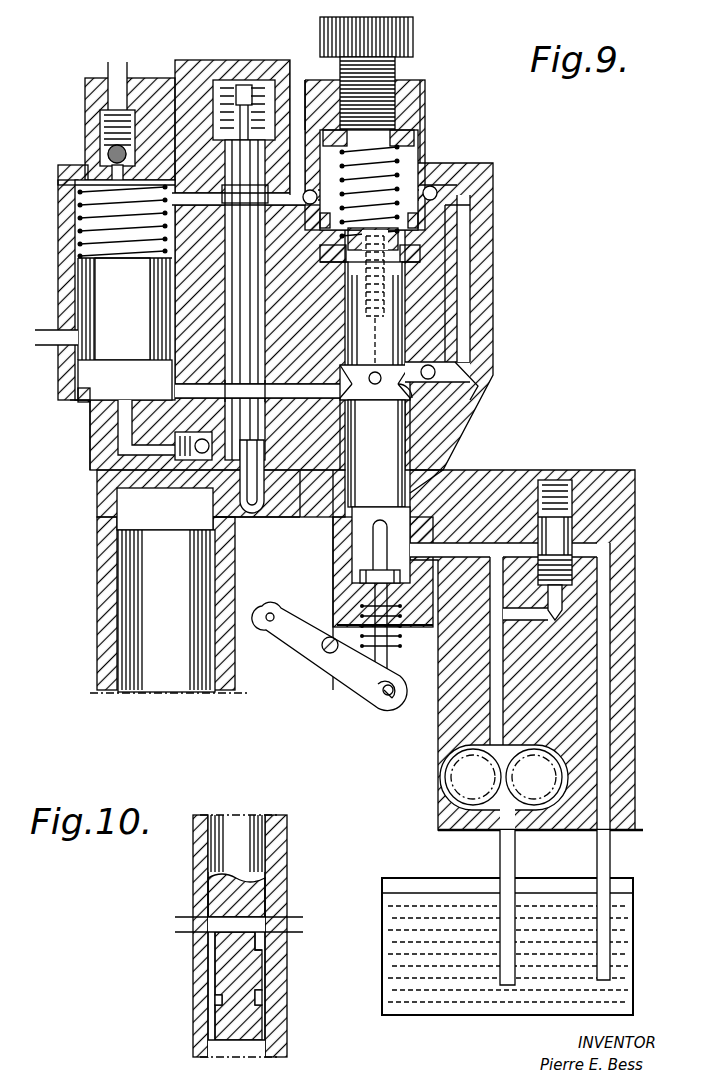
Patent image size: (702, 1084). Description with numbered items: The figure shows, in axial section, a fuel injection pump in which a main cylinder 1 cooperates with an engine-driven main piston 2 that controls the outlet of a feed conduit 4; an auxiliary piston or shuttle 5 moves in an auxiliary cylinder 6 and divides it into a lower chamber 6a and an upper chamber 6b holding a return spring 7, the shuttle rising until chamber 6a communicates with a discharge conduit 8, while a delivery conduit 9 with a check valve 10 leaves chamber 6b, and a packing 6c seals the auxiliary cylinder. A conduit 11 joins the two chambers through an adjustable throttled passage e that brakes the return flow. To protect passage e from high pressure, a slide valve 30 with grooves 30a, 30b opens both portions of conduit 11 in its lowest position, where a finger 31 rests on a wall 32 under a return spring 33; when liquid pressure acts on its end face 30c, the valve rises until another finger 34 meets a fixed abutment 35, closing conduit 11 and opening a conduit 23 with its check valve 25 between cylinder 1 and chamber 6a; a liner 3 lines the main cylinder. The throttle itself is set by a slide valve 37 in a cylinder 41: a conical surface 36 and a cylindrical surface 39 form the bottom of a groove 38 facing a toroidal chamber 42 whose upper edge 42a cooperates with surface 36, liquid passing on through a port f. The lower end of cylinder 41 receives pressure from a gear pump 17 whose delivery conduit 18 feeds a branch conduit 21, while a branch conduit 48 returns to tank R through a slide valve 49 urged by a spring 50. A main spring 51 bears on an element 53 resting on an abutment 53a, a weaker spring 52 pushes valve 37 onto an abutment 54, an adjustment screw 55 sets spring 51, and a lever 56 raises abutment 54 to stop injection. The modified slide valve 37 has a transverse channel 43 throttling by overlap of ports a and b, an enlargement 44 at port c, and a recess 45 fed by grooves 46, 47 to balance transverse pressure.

In FIG. 9, the main cylinder 1 is at (125, 613).
In FIG. 9, the main piston 2 is at (157, 648).
In FIG. 9, the cylinder liner 3 is at (125, 565).
In FIG. 9, the feed conduit 4 is at (118, 557).
In FIG. 9, the auxiliary piston or shuttle 5 is at (103, 300).
In FIG. 9, the auxiliary cylinder 6 is at (90, 283).
In FIG. 9, the chamber 6a is at (115, 386).
In FIG. 9, the chamber 6b is at (90, 190).
In FIG. 9, the packing ring 6c is at (78, 394).
In FIG. 9, the return spring 7 is at (80, 213).
In FIG. 9, the discharge conduit 8 is at (46, 342).
In FIG. 9, the delivery conduit 9 is at (108, 97).
In FIG. 9, the check valve 10 is at (112, 152).
In FIG. 9, the conduit 11 is at (193, 200).
In FIG. 10, the conduit 11 is at (215, 918).
In FIG. 9, the gear pump 17 is at (444, 778).
In FIG. 9, the delivery conduit 18 is at (494, 612).
In FIG. 9, the branch conduit 21 is at (441, 557).
In FIG. 9, the conduit 23 is at (125, 441).
In FIG. 9, the check valve 25 is at (120, 466).
In FIG. 9, the slide valve 30 is at (250, 257).
In FIG. 9, the groove 30a is at (178, 393).
In FIG. 9, the groove 30b is at (225, 188).
In FIG. 9, the end face 30c is at (262, 463).
In FIG. 9, the finger 31 is at (264, 490).
In FIG. 9, the wall 32 is at (245, 518).
In FIG. 9, the return spring 33 is at (263, 80).
In FIG. 9, the finger 34 is at (238, 125).
In FIG. 9, the fixed abutment 35 is at (245, 98).
In FIG. 9, the conical surface 36 is at (410, 393).
In FIG. 9, the slide valve 37 is at (366, 448).
In FIG. 10, the slide valve 37 is at (250, 970).
In FIG. 9, the groove 38 is at (341, 399).
In FIG. 9, the cylindrical surface 39 is at (347, 368).
In FIG. 9, the cylinder 41 is at (432, 498).
In FIG. 10, the cylinder 41 is at (215, 1048).
In FIG. 9, the toroidal shaped chamber 42 is at (440, 382).
In FIG. 9, the upper edge 42a is at (465, 363).
In FIG. 10, the transverse channel 43 is at (270, 882).
In FIG. 10, the enlargement 44 is at (256, 946).
In FIG. 10, the recess 45 is at (258, 1001).
In FIG. 10, the groove 46 is at (214, 972).
In FIG. 10, the groove 47 is at (219, 1001).
In FIG. 9, the branch conduit 48 is at (522, 545).
In FIG. 9, the slide valve 49 is at (566, 536).
In FIG. 9, the spring 50 is at (580, 478).
In FIG. 9, the main spring 51 is at (400, 167).
In FIG. 9, the secondary spring 52 is at (400, 301).
In FIG. 9, the element 53 is at (425, 243).
In FIG. 9, the abutment 53a is at (395, 282).
In FIG. 9, the abutment 54 is at (375, 541).
In FIG. 9, the adjustment screw 55 is at (405, 32).
In FIG. 9, the lever 56 is at (293, 638).
In FIG. 10, the port a is at (213, 917).
In FIG. 10, the port b is at (213, 936).
In FIG. 10, the port c is at (275, 918).
In FIG. 9, the throttled passage e is at (434, 400).
In FIG. 9, the port f is at (373, 337).
In FIG. 9, the tank R is at (634, 963).